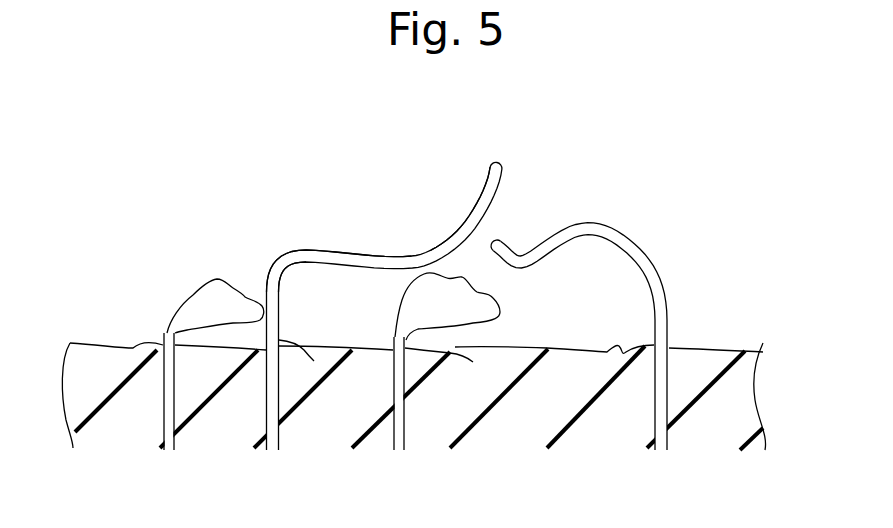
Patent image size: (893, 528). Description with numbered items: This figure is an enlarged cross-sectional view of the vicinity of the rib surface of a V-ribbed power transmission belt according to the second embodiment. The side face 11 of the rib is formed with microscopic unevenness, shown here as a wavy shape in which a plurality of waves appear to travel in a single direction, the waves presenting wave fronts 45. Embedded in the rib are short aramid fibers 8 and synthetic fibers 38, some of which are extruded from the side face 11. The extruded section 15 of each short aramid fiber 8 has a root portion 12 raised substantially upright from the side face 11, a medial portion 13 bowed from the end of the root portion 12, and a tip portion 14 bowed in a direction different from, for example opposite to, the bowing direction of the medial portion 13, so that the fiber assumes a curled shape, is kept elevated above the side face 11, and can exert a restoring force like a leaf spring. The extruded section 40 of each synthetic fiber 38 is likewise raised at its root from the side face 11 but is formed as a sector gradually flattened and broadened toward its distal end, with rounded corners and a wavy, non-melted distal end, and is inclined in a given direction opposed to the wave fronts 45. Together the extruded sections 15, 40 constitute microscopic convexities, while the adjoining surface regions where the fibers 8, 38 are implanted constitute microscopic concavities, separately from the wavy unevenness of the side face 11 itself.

The short aramid fiber 8 is at (279, 435).
The side face of the rib 11 is at (727, 347).
The root portion 12 is at (277, 268).
The medial portion 13 is at (355, 250).
The tip portion 14 is at (473, 232).
The extruded section of the short aramid fiber 15 is at (298, 219).
The synthetic fiber 38 is at (176, 420).
The extruded section of the synthetic fiber 40 is at (524, 308).
The wave fronts 45 is at (296, 345).